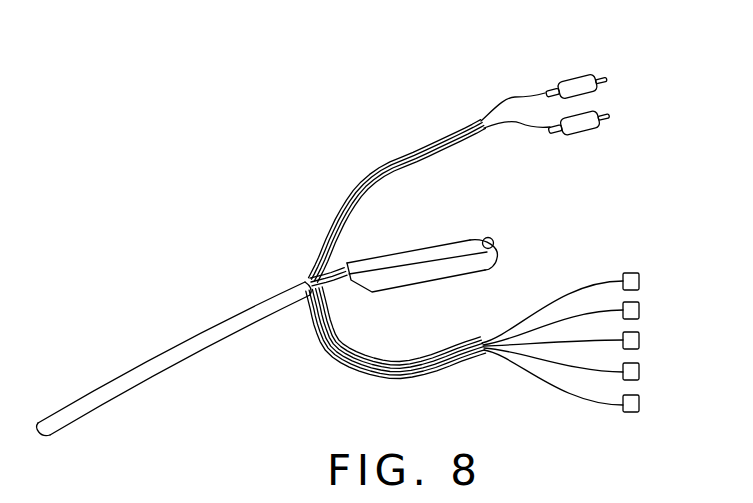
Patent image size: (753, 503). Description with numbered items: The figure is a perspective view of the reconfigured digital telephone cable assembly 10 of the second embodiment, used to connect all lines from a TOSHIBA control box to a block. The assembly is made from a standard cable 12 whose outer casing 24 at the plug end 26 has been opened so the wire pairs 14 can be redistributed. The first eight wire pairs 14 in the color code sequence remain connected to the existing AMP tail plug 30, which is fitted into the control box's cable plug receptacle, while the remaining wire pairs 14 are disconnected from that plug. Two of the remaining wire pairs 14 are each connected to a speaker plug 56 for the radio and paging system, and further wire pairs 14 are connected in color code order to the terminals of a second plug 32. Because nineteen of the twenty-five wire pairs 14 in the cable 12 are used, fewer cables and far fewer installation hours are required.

The digital telephone cable assembly 10 is at (123, 187).
The cable 12 is at (158, 374).
The wire pairs 14 is at (380, 168).
The outer casing 24 is at (233, 313).
The plug end 26 is at (288, 300).
The AMP tail plug 30 is at (498, 255).
The second AMP tail plug 32 is at (639, 281).
The speaker plug 56 is at (578, 73).